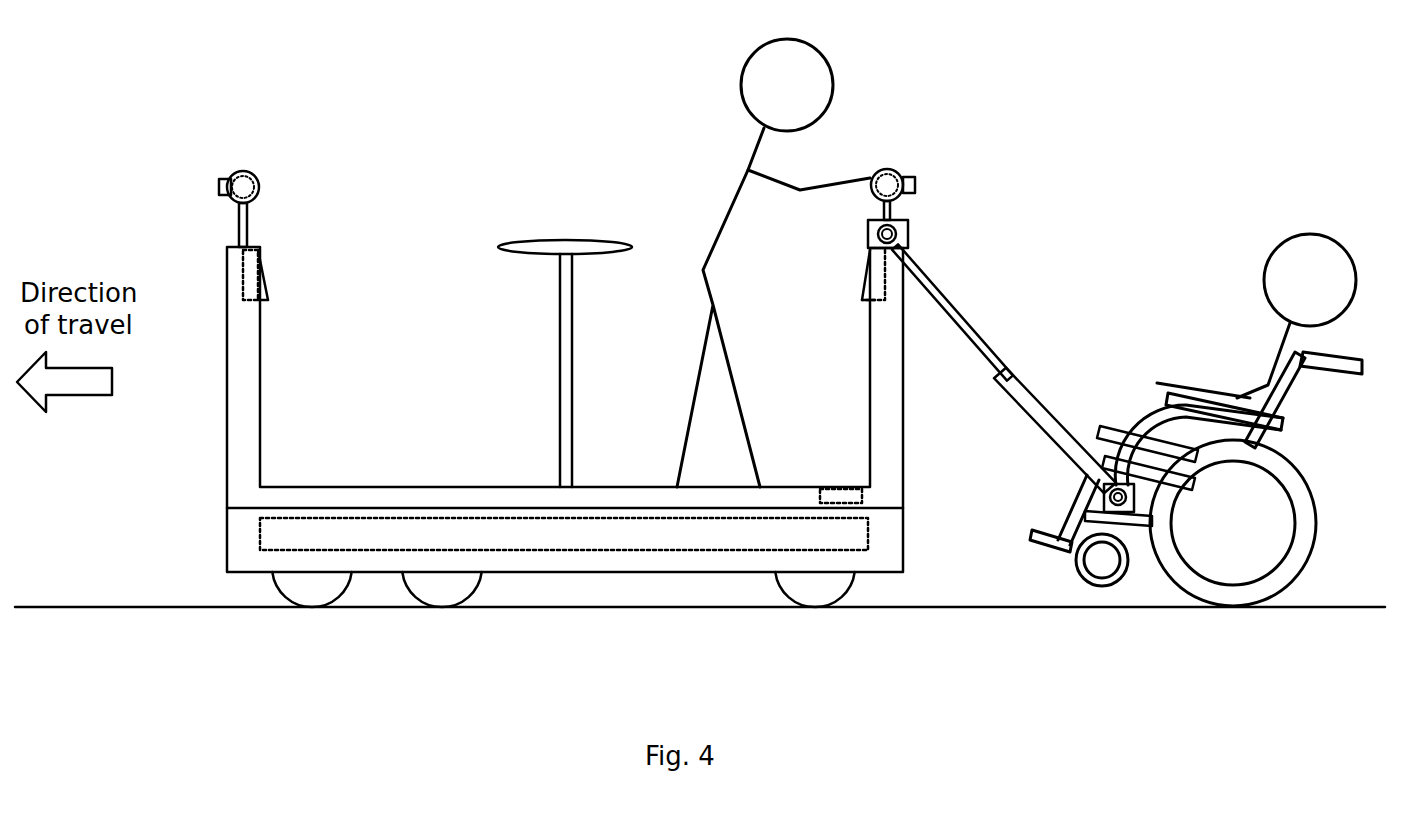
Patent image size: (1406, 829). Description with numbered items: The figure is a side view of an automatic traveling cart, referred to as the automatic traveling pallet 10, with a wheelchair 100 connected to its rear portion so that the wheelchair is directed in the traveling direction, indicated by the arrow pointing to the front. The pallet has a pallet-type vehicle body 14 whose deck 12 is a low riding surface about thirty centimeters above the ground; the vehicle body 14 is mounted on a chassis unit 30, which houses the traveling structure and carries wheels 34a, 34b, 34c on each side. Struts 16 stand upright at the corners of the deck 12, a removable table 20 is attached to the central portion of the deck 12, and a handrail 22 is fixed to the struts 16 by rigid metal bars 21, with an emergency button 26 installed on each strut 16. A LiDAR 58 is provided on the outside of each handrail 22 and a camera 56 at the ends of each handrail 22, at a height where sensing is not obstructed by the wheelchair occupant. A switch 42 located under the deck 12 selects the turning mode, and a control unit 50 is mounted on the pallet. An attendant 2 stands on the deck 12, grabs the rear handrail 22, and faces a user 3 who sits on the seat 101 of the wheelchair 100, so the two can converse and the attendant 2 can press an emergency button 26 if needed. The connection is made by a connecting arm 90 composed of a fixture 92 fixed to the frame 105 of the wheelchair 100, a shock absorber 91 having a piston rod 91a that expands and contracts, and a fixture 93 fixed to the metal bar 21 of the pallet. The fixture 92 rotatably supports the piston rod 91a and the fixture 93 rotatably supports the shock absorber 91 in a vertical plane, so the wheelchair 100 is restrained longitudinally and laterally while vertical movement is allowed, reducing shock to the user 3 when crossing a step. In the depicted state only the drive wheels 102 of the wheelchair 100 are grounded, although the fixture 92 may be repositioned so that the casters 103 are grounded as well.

The attendant 2 is at (830, 60).
The user 3 is at (1310, 234).
The automatic traveling pallet 10 is at (487, 133).
The deck 12 is at (600, 487).
The vehicle body 14 is at (890, 497).
The strut 16 is at (227, 430).
The table 20 is at (600, 245).
The metal bar 21 is at (884, 212).
The handrail 22 is at (240, 170).
The emergency button 26 is at (243, 300).
The chassis unit 30 is at (624, 452).
The wheel 34a is at (340, 605).
The wheel 34b is at (470, 605).
The wheel 34c is at (848, 605).
The switch 42 is at (826, 496).
The control unit 50 is at (665, 550).
The camera 56 is at (258, 200).
The LiDAR 58 is at (218, 185).
The connecting arm 90 is at (1004, 368).
The shock absorber 91 is at (1033, 382).
The piston rod 91a is at (980, 330).
The fixture 92 is at (1135, 515).
The fixture 93 is at (868, 236).
The wheelchair 100 is at (1210, 500).
The seat 101 is at (1135, 432).
The drive wheel 102 is at (1280, 595).
The caster 103 is at (1105, 595).
The frame 105 is at (1096, 432).